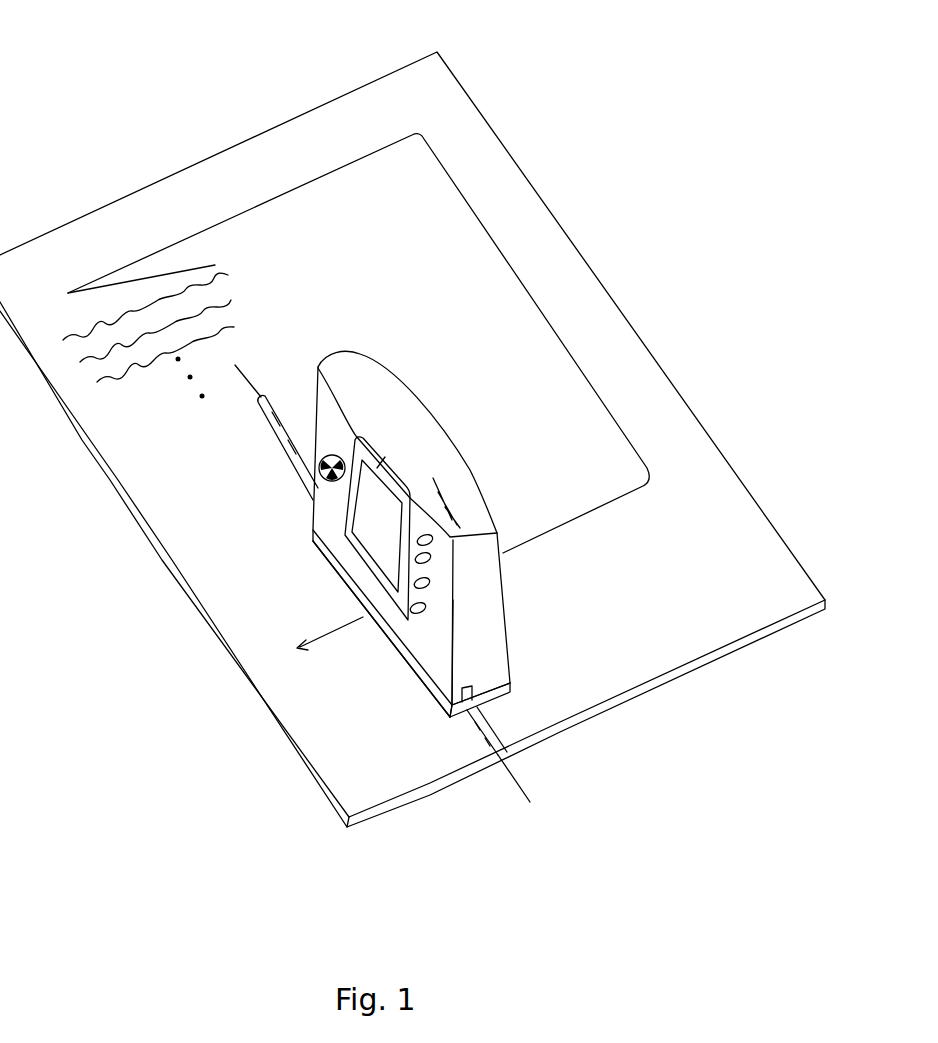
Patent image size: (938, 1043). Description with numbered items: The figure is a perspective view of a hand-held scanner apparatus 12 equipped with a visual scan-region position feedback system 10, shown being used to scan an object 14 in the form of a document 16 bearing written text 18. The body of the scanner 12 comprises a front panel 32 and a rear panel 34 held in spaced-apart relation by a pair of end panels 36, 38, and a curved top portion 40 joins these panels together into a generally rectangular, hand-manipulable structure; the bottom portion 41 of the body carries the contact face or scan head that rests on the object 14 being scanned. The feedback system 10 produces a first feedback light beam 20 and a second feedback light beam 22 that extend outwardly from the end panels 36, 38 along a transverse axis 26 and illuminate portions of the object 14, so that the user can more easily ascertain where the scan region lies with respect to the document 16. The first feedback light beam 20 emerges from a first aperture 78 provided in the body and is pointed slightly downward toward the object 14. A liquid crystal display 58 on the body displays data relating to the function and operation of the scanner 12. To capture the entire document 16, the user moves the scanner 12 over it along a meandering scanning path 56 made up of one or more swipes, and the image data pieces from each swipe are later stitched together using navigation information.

The visual scan-region position feedback system 10 is at (117, 66).
The scanner apparatus 12 is at (376, 361).
The object 14 is at (552, 218).
The document 16 is at (628, 323).
The written text 18 is at (210, 297).
The first feedback light beam 20 is at (495, 723).
The second feedback light beam 22 is at (288, 461).
The transverse axis 26 is at (512, 775).
The front panel 32 is at (440, 663).
The rear panel 34 is at (505, 604).
The end panel 36 is at (478, 630).
The end panel 38 is at (317, 383).
The curved top portion 40 is at (423, 443).
The bottom portion 41 is at (447, 712).
The meandering scanning path 56 is at (478, 226).
The liquid crystal display 58 is at (373, 560).
The first aperture 78 is at (464, 687).